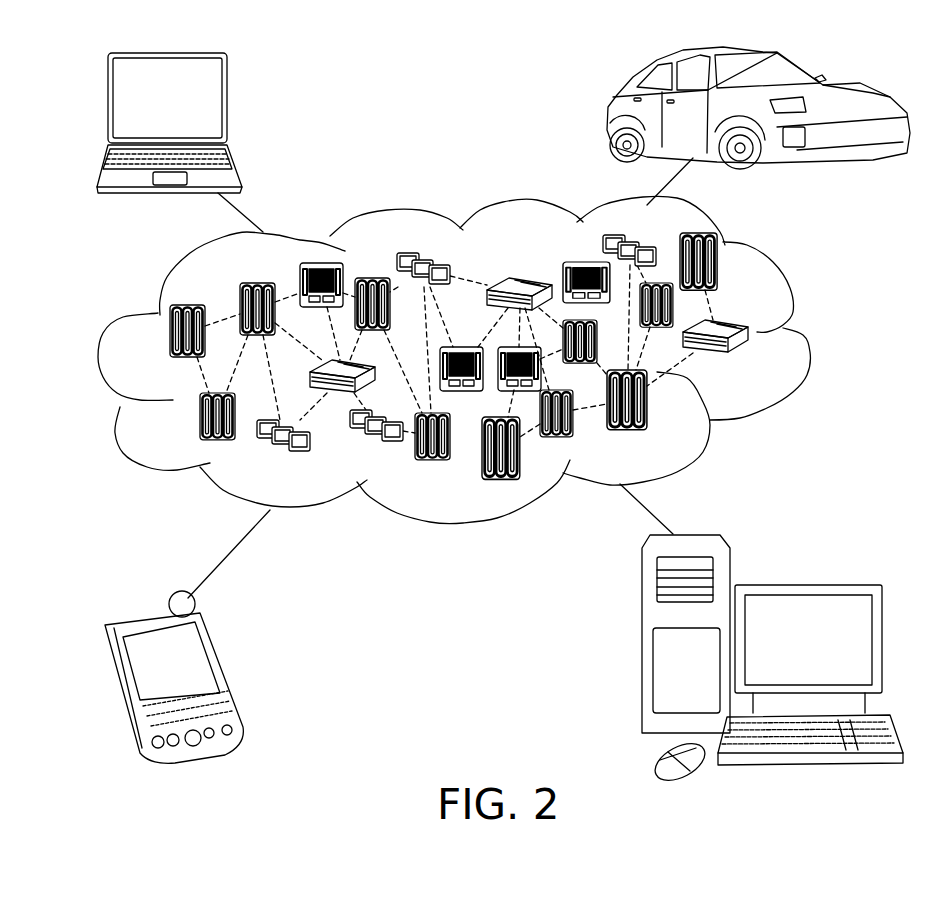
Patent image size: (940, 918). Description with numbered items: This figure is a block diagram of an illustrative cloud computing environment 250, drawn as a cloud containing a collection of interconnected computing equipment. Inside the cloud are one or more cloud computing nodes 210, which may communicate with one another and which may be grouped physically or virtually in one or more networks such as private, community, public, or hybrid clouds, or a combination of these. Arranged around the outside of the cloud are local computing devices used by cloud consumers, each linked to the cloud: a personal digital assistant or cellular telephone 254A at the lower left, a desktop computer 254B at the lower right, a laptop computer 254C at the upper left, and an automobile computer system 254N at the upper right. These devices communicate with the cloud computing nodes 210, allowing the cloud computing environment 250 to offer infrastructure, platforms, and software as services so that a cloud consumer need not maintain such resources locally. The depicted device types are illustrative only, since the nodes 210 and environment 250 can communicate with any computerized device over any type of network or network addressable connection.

The cloud computing environment 250 is at (795, 336).
The cloud computing nodes 210 is at (752, 360).
The personal digital assistant (PDA) or cellular telephone 254A is at (227, 668).
The desktop computer 254B is at (802, 584).
The laptop computer 254C is at (231, 104).
The automobile computer system 254N is at (608, 117).